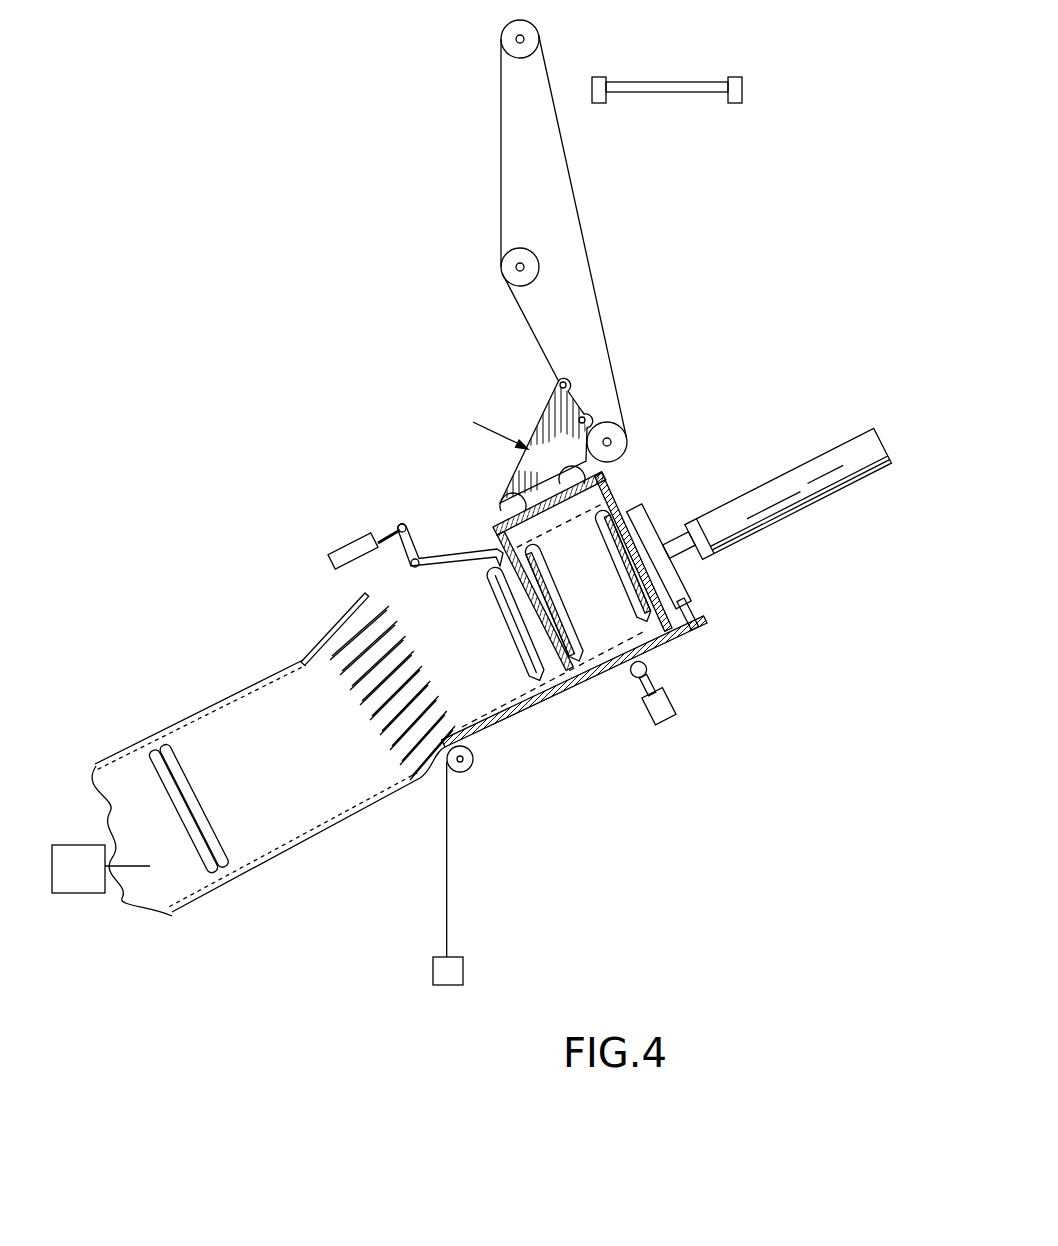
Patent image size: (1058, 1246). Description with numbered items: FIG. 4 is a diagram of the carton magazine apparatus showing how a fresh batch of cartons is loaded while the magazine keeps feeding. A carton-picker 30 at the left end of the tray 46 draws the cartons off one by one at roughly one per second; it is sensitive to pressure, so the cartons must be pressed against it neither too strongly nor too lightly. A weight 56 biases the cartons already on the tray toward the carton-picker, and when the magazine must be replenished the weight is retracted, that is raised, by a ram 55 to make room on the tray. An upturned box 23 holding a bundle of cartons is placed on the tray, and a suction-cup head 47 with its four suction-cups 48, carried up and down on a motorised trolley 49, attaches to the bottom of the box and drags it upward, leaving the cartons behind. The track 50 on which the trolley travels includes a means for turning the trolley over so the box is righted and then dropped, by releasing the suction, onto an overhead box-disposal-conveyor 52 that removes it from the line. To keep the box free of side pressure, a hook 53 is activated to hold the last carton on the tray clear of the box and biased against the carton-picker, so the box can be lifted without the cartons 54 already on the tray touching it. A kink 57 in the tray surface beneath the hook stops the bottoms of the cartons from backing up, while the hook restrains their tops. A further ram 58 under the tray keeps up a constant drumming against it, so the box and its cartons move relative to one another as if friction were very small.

The box 23 is at (620, 487).
The carton-picker 30 is at (70, 893).
The tray 46 is at (288, 848).
The suction-cup head 47 is at (482, 428).
The suction-cups 48 is at (500, 507).
The trolley 49 is at (543, 410).
The track 50 is at (513, 302).
The box-disposal-conveyor 52 is at (675, 93).
The hook 53 is at (447, 550).
The cartons 54 is at (355, 634).
The ram 55 is at (825, 452).
The weight 56 is at (463, 971).
The kink 57 is at (420, 787).
The ram 58 is at (680, 700).